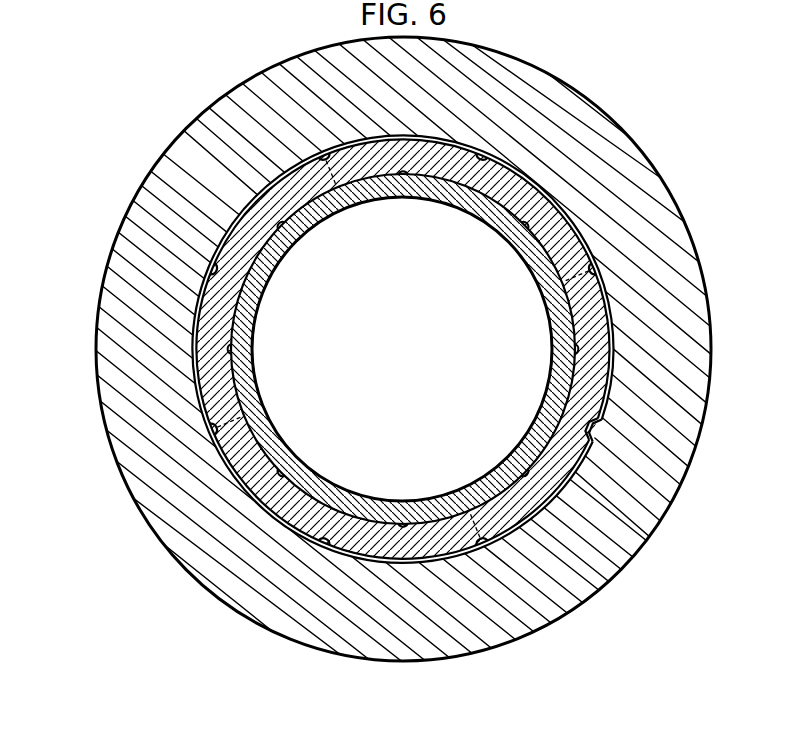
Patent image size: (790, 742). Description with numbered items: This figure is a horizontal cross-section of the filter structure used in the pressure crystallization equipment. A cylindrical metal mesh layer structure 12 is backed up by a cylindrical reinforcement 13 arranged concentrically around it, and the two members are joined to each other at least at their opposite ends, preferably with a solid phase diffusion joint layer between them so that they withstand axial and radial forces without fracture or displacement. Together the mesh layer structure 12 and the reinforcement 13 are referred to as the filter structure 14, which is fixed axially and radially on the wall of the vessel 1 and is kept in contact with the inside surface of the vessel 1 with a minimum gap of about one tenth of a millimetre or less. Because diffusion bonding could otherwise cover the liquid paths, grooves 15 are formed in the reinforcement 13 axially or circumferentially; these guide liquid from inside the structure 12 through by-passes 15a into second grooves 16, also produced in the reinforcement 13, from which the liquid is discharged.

The vessel 1 is at (684, 263).
The metal mesh layer structure 12 is at (566, 333).
The reinforcement 13 is at (584, 372).
The filter structure 14 is at (403, 349).
The grooves 15 is at (525, 231).
The by-passes 15a is at (490, 532).
The second grooves 16 is at (601, 426).